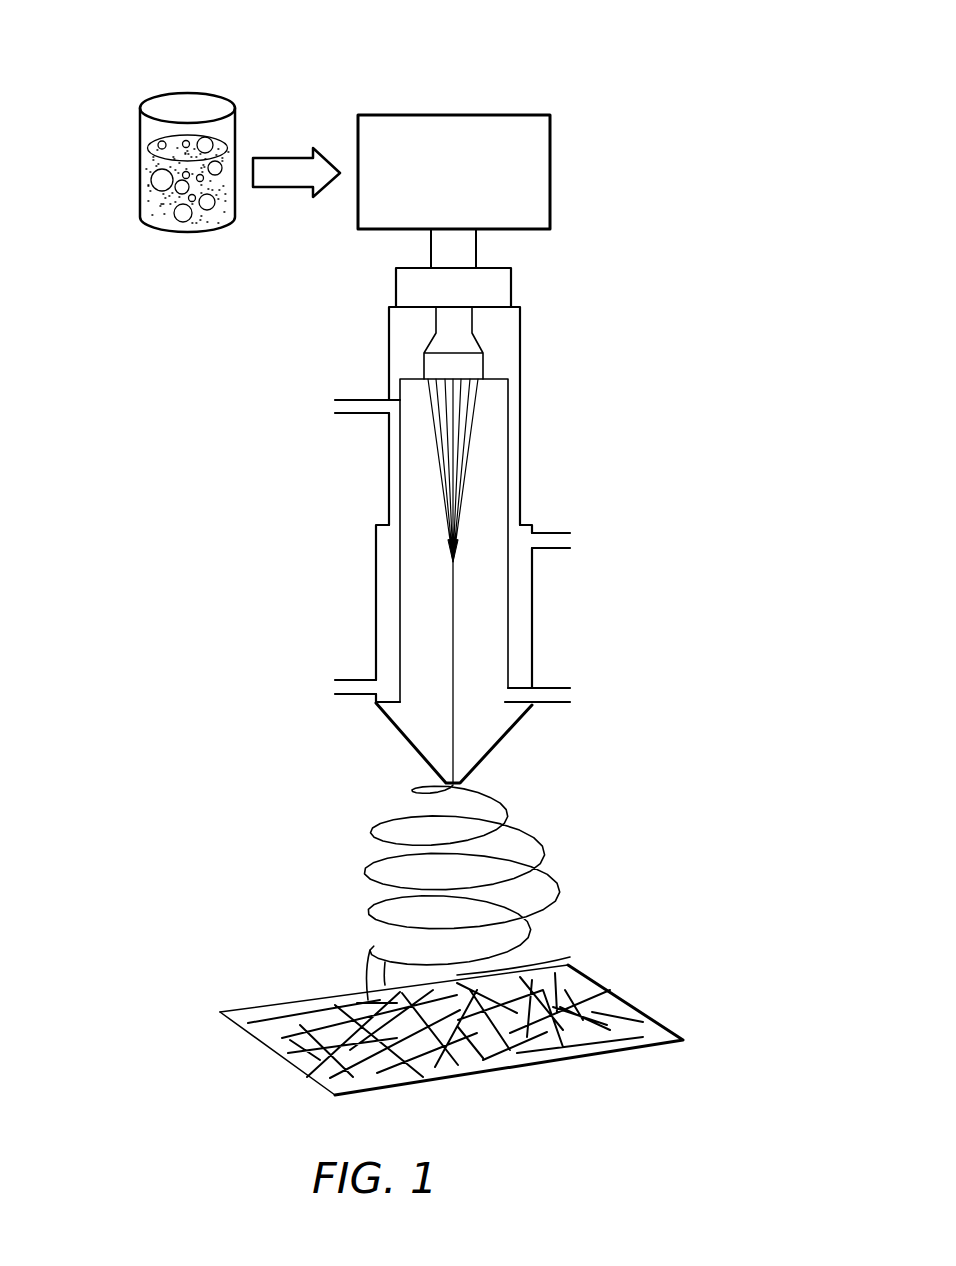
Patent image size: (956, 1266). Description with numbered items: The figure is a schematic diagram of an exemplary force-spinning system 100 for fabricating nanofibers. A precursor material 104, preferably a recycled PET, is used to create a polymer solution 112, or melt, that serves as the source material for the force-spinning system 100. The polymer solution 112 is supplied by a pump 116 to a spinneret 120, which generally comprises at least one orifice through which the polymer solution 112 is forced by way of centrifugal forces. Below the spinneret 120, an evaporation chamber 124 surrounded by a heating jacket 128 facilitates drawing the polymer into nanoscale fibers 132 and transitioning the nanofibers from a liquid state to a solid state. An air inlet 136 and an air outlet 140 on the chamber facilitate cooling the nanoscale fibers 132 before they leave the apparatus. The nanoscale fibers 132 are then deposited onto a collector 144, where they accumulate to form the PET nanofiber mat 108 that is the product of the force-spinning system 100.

The force-spinning system 100 is at (543, 52).
The precursor material 104 is at (147, 187).
The PET nanofiber mat 108 is at (592, 1063).
The polymer solution 112 is at (553, 180).
The pump 116 is at (512, 290).
The spinneret 120 is at (477, 367).
The evaporation chamber 124 is at (497, 602).
The heating jacket 128 is at (379, 575).
The nanoscale fibers 132 is at (565, 907).
The air inlet 136 is at (562, 684).
The air outlet 140 is at (346, 398).
The collector 144 is at (258, 1010).